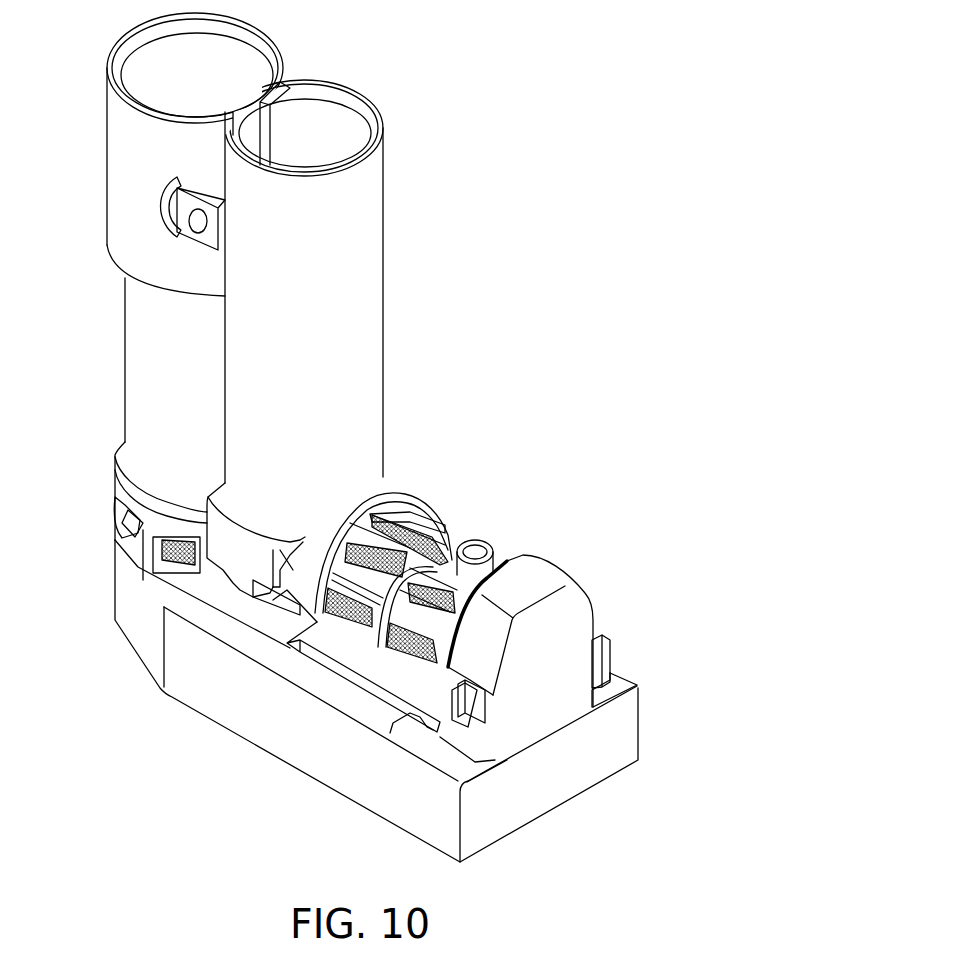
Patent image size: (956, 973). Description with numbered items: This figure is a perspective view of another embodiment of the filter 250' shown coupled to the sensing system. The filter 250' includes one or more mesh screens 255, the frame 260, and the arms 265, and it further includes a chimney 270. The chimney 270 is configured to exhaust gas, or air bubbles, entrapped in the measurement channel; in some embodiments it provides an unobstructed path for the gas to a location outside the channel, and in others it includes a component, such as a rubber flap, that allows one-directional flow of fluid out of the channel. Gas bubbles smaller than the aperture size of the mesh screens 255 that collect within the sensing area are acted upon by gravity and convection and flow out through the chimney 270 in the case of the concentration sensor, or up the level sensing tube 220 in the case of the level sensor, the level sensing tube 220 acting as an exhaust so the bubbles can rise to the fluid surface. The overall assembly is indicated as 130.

The cassette assembly 130 is at (580, 72).
The level sensing tube 220 is at (125, 342).
The filter 250' is at (331, 614).
The mesh screens 255 is at (115, 512).
The frame 260 is at (255, 620).
The arms 265 is at (130, 556).
The chimney 270 is at (493, 548).